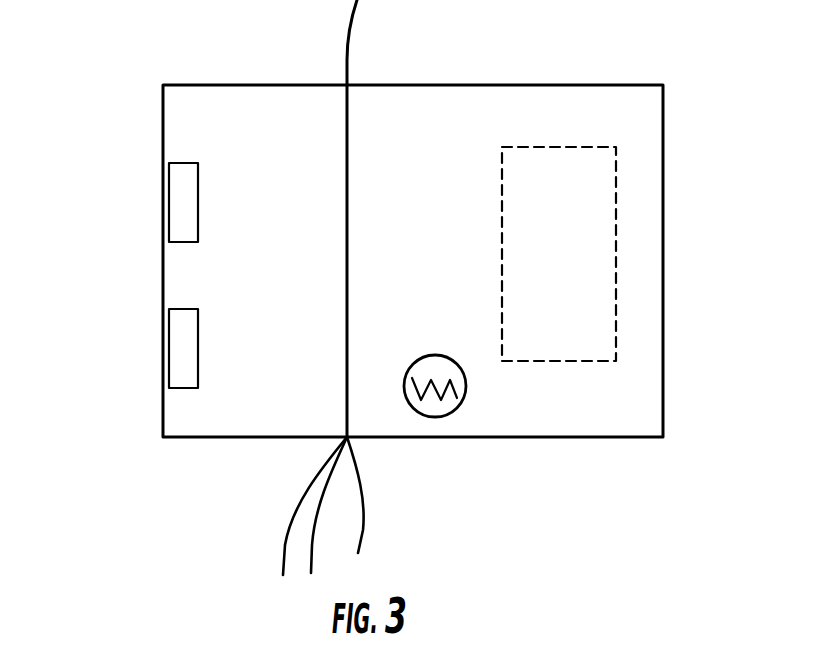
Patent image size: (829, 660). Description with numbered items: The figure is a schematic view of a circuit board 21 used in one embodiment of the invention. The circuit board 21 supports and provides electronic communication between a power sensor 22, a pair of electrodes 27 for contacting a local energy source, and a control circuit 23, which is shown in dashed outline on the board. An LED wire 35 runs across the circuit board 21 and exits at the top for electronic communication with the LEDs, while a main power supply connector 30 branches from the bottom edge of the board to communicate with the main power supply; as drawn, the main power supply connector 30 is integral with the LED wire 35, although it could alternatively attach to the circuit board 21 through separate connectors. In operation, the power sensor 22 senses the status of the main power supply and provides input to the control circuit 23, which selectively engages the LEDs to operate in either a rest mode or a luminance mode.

The circuit board 21 is at (617, 437).
The power sensor 22 is at (443, 417).
The control circuit 23 is at (616, 195).
The electrodes 27 is at (178, 202).
The main power supply connector 30 is at (285, 535).
The LED wire 35 is at (348, 52).